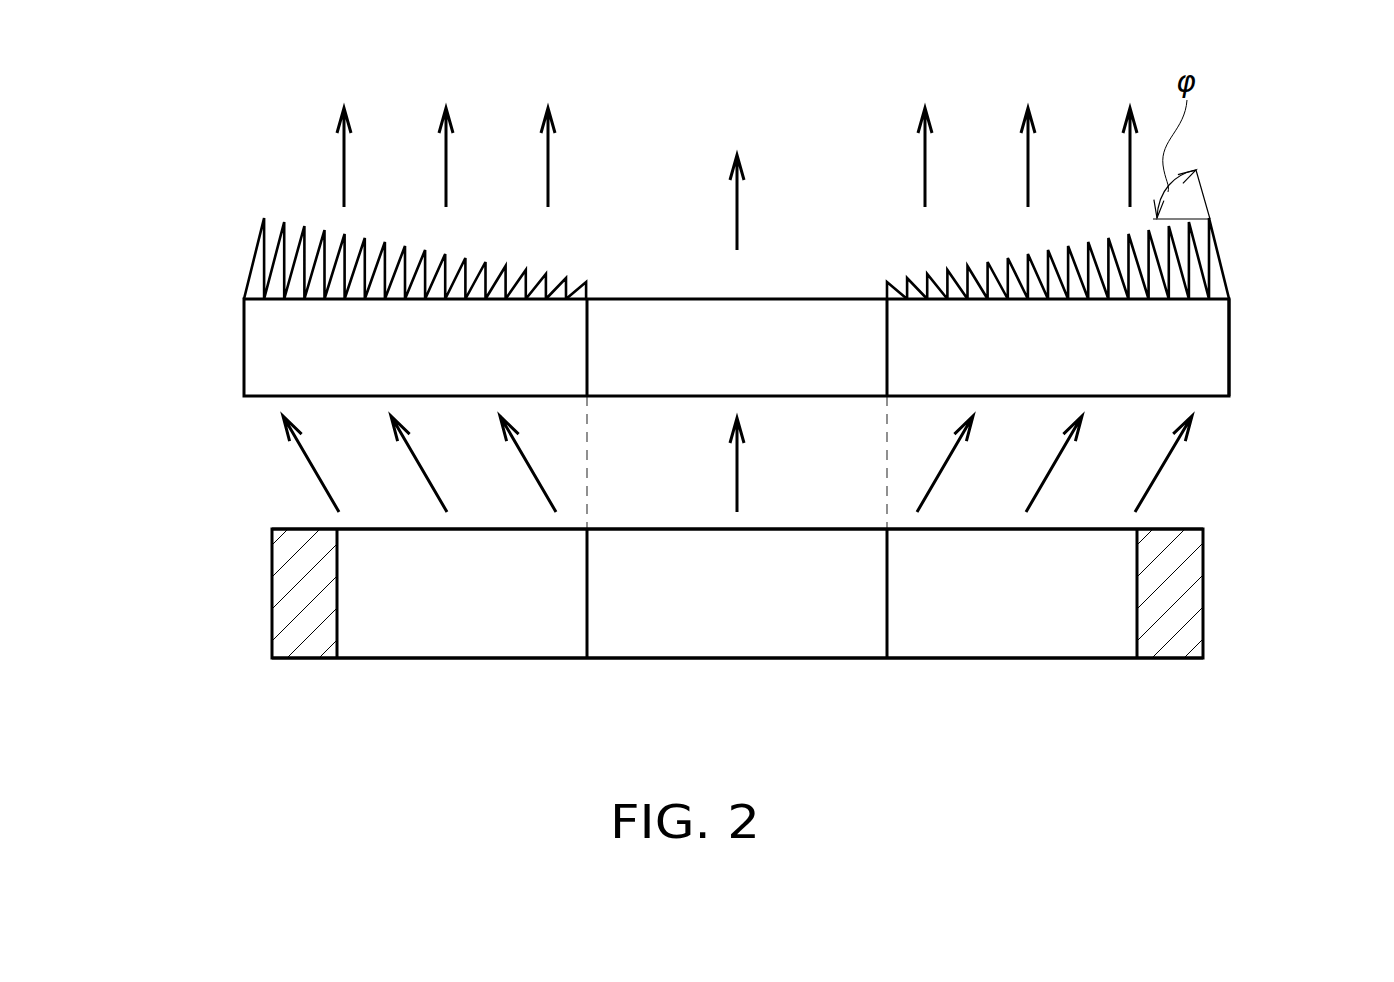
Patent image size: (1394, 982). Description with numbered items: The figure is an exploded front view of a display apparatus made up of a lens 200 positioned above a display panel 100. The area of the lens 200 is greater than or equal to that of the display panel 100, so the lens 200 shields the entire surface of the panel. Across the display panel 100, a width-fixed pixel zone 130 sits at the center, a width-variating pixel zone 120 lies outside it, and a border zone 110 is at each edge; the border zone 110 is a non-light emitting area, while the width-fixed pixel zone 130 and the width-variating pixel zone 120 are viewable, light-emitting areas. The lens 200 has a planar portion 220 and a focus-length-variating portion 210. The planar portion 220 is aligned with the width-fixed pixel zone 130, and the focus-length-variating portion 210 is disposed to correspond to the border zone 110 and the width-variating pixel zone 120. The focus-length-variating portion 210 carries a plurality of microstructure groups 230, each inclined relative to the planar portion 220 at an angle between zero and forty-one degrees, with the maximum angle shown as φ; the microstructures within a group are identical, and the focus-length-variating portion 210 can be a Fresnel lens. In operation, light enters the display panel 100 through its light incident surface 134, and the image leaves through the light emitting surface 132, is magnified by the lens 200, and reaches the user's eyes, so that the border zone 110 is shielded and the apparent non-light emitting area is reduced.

The display panel 100 is at (1222, 557).
The border zone 110 is at (1188, 592).
The width-variating pixel zone 120 is at (1048, 614).
The width-fixed pixel zone 130 is at (760, 614).
The light emitting surface 132 is at (767, 530).
The light incident surface 134 is at (1023, 660).
The lens 200 is at (225, 352).
The focus-length-variating portion 210 is at (1248, 220).
The planar portion 220 is at (760, 364).
The microstructure groups 230 is at (922, 283).